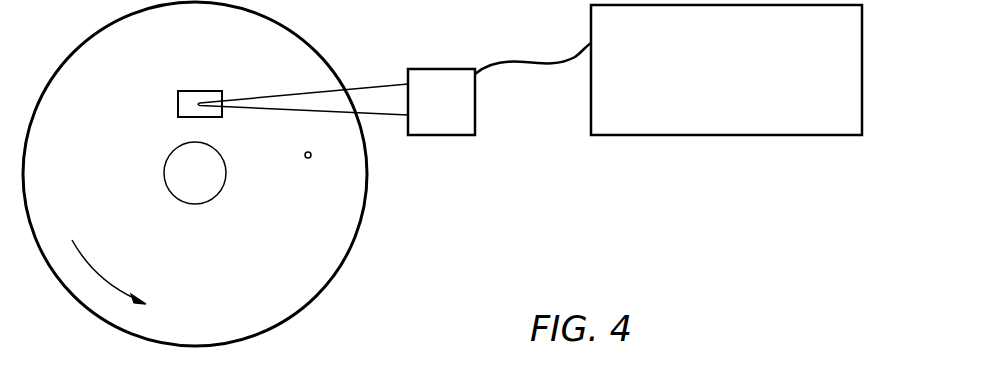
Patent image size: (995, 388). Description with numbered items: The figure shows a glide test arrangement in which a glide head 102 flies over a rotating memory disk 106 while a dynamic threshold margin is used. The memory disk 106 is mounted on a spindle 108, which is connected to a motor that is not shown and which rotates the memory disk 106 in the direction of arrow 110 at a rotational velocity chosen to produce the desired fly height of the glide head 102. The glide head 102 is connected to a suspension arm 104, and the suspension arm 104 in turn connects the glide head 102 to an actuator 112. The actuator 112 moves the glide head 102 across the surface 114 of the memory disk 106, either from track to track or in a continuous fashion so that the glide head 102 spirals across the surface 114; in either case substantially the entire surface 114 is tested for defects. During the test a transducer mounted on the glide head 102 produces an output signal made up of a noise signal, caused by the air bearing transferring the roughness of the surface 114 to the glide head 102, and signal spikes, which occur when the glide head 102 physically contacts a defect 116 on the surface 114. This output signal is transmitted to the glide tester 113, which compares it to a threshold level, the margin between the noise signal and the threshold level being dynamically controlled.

The glide head 102 is at (198, 90).
The suspension arm 104 is at (370, 82).
The memory disk 106 is at (305, 300).
The spindle 108 is at (217, 197).
The arrow 110 is at (101, 273).
The actuator 112 is at (467, 137).
The glide tester 113 is at (816, 137).
The surface 114 is at (85, 165).
The defect 116 is at (310, 159).